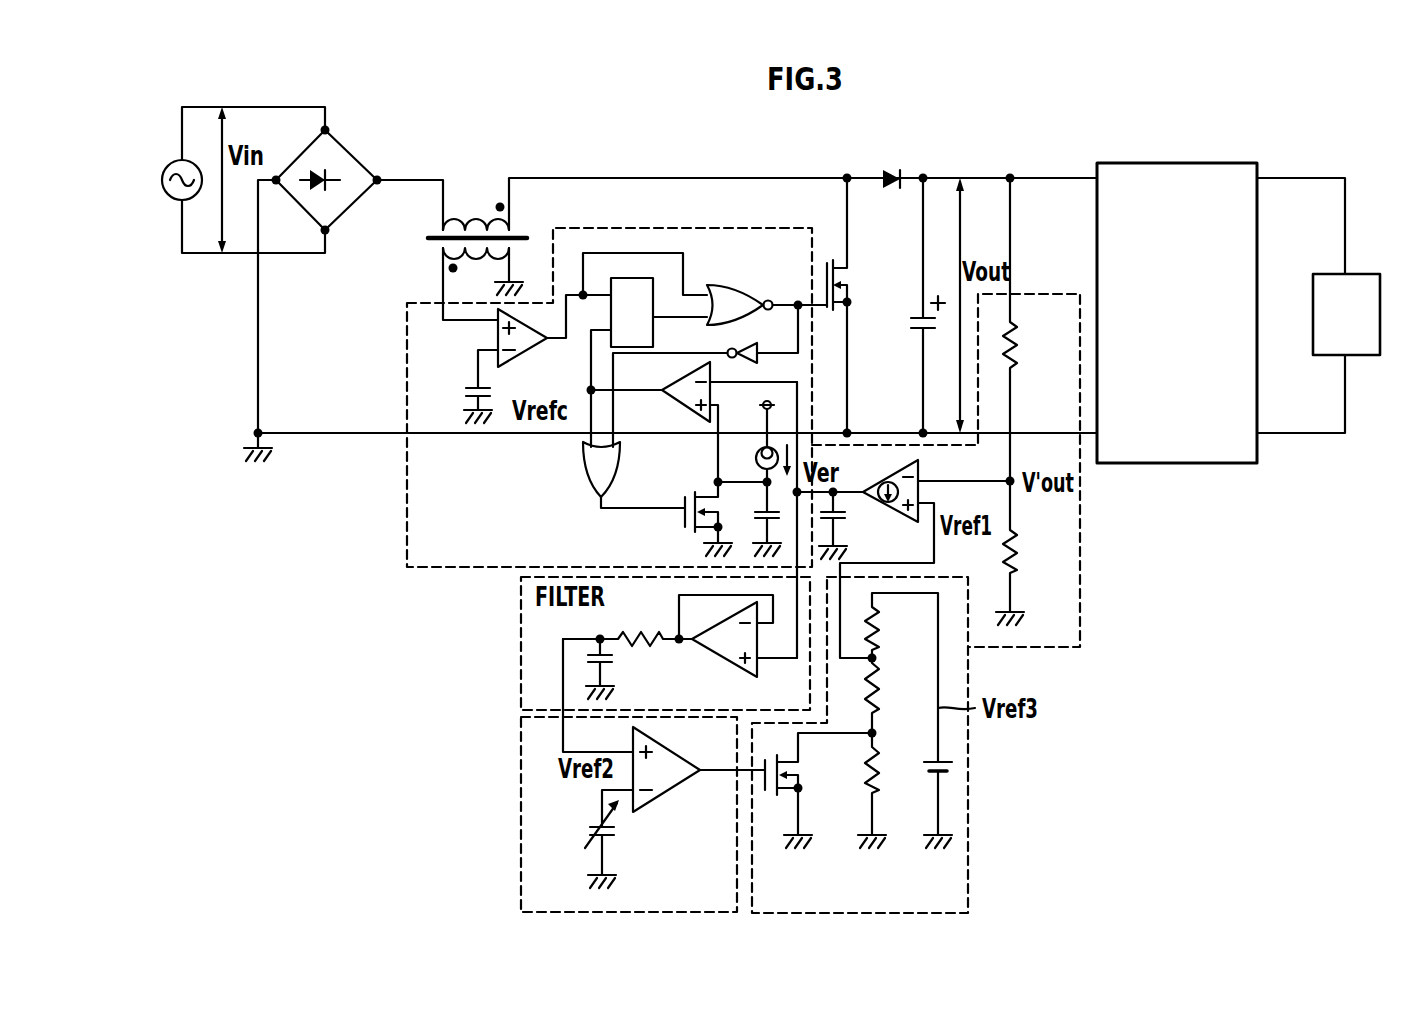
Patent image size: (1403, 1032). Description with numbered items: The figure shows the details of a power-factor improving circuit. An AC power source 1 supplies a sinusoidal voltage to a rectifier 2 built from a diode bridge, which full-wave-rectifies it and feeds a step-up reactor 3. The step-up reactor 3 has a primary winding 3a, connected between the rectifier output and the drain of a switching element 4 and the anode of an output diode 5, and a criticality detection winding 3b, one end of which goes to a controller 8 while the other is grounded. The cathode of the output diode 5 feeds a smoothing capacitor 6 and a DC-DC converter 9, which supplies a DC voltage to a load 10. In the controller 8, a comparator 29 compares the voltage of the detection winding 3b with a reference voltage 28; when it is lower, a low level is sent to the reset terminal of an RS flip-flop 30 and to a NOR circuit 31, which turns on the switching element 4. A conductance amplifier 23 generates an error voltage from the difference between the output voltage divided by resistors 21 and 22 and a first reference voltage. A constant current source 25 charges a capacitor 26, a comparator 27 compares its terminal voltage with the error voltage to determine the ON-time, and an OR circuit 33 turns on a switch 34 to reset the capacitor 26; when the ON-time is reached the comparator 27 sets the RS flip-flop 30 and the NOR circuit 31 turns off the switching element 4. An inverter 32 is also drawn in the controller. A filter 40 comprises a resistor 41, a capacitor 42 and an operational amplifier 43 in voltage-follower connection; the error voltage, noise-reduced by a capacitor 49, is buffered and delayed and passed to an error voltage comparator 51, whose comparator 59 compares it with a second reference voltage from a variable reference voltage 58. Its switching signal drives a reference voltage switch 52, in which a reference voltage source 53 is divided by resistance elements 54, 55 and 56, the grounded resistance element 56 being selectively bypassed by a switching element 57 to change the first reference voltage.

The AC power source 1 is at (172, 162).
The rectifier 2 is at (352, 142).
The step-up reactor 3 is at (489, 237).
The primary winding 3a is at (478, 207).
The criticality detection winding 3b is at (483, 284).
The switching element 4 is at (850, 276).
The output diode 5 is at (893, 170).
The smoothing capacitor 6 is at (915, 318).
The controller 8 is at (407, 512).
The DC-DC converter 9 is at (1162, 463).
The load 10 is at (1360, 274).
The resistor 21 is at (1018, 345).
The resistor 22 is at (1018, 570).
The conductance amplifier 23 is at (900, 481).
The constant current source 25 is at (756, 462).
The capacitor 26 is at (760, 515).
The comparator 27 is at (670, 400).
The reference voltage 28 is at (470, 385).
The comparator 29 is at (535, 350).
The RS flip-flop 30 is at (655, 330).
The NOR circuit 31 is at (747, 287).
The inverter 32 is at (748, 350).
The OR circuit 33 is at (580, 465).
The switch 34 is at (690, 497).
The filter 40 is at (521, 655).
The resistor 41 is at (648, 632).
The capacitor 42 is at (615, 658).
The operational amplifier 43 is at (712, 657).
The capacitor 49 is at (848, 518).
The error voltage comparator 51 is at (521, 792).
The reference voltage switch 52 is at (975, 757).
The reference voltage source 53 is at (934, 767).
The resistance element 54 is at (878, 638).
The resistance element 55 is at (878, 705).
The resistance element 56 is at (868, 778).
The switching element 57 is at (770, 794).
The variable reference voltage 58 is at (588, 832).
The comparator 59 is at (665, 792).